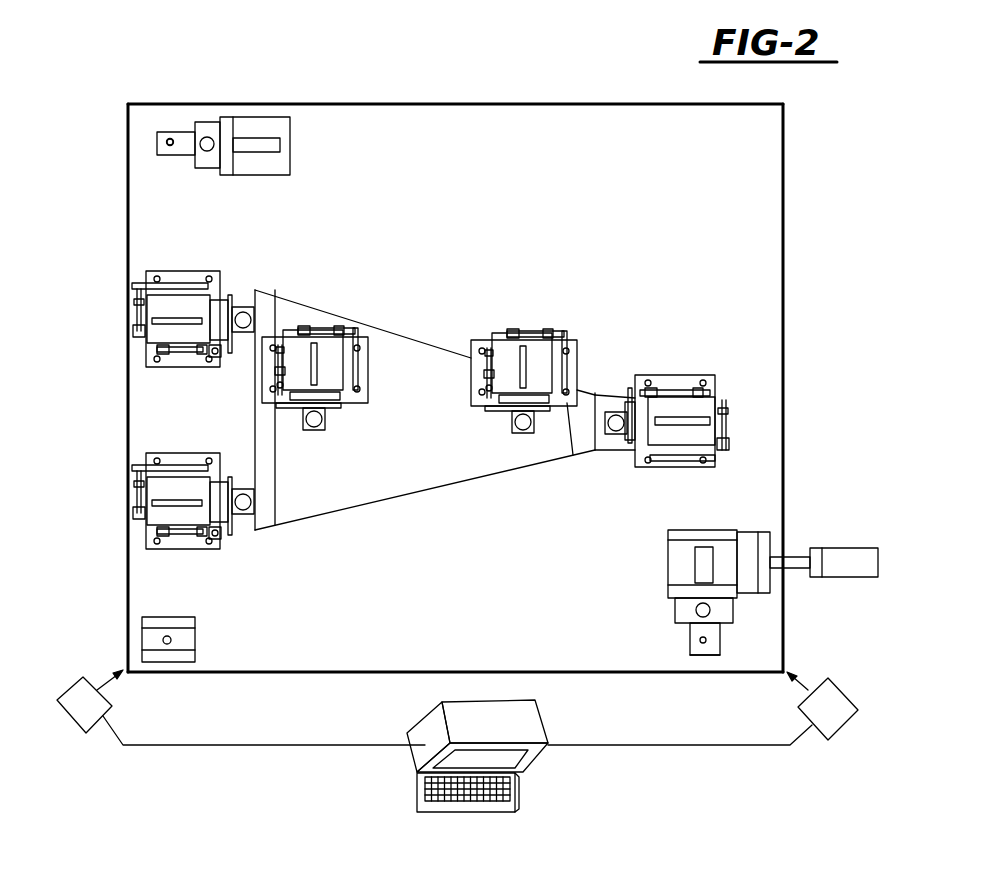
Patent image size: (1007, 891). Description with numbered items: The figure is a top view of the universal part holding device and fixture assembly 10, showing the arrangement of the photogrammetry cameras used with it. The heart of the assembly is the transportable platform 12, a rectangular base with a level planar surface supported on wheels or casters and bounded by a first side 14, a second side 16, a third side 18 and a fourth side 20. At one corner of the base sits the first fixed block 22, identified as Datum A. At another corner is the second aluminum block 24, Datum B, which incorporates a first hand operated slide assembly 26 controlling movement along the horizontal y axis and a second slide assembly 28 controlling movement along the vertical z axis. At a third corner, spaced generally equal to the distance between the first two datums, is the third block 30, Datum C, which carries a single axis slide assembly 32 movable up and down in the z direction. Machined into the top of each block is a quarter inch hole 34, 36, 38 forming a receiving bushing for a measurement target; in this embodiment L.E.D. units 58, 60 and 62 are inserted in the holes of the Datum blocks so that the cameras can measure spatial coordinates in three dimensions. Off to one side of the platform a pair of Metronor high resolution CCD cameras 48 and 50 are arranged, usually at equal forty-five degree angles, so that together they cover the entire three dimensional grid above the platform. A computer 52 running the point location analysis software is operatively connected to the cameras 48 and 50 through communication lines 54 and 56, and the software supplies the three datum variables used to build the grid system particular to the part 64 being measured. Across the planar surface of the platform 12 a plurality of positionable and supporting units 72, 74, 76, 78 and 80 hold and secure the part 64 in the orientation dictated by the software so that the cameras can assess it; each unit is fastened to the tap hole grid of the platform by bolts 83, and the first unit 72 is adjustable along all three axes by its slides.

The universal part holding device and fixture assembly 10 is at (817, 351).
The transportable platform 12 is at (504, 92).
The first side 14 is at (128, 415).
The second side 16 is at (330, 673).
The third side 18 is at (783, 133).
The fourth side 20 is at (352, 104).
The first fixed block 22 is at (196, 638).
The second aluminum block 24 is at (703, 656).
The first hand operated slide assembly 26 is at (846, 548).
The second slide assembly 28 is at (657, 607).
The third block 30 is at (177, 156).
The single axis slide assembly 32 is at (210, 170).
The hole 34 is at (167, 635).
The hole 36 is at (699, 641).
The hole 38 is at (170, 139).
The CCD camera 48 is at (75, 724).
The CCD camera 50 is at (840, 735).
The computer 52 is at (390, 763).
The communication line 54 is at (233, 746).
The communication line 56 is at (645, 746).
The L.E.D. unit 58 is at (162, 640).
The L.E.D. unit 60 is at (714, 652).
The L.E.D. unit 62 is at (166, 143).
The part 64 is at (413, 357).
The positionable and supporting unit 72 is at (203, 565).
The positionable and supporting unit 74 is at (168, 262).
The positionable and supporting unit 76 is at (353, 430).
The positionable and supporting unit 78 is at (531, 311).
The positionable and supporting unit 80 is at (670, 358).
The bolt 83 is at (694, 468).